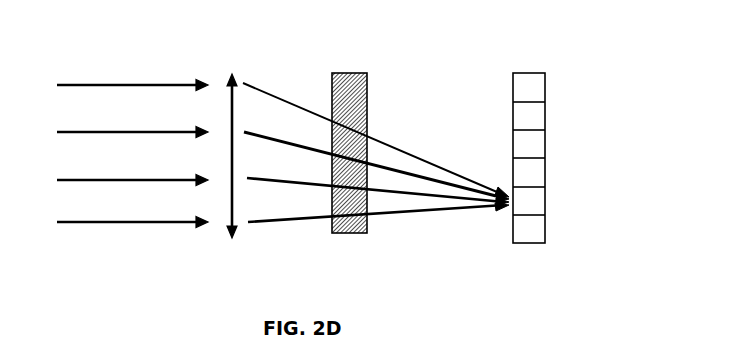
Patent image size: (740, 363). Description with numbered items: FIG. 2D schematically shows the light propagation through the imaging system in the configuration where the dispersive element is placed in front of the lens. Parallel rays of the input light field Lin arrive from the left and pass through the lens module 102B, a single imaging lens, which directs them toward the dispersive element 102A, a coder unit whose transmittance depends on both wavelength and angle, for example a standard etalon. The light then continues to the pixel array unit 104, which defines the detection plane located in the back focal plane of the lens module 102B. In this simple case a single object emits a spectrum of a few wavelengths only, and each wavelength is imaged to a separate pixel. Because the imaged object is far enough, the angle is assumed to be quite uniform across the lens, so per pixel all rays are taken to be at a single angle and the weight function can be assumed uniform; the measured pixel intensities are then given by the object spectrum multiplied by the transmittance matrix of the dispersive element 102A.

The input light field Lin is at (132, 139).
The lens module 102B is at (239, 142).
The dispersive element 102A is at (353, 136).
The pixel array unit 104 is at (529, 141).